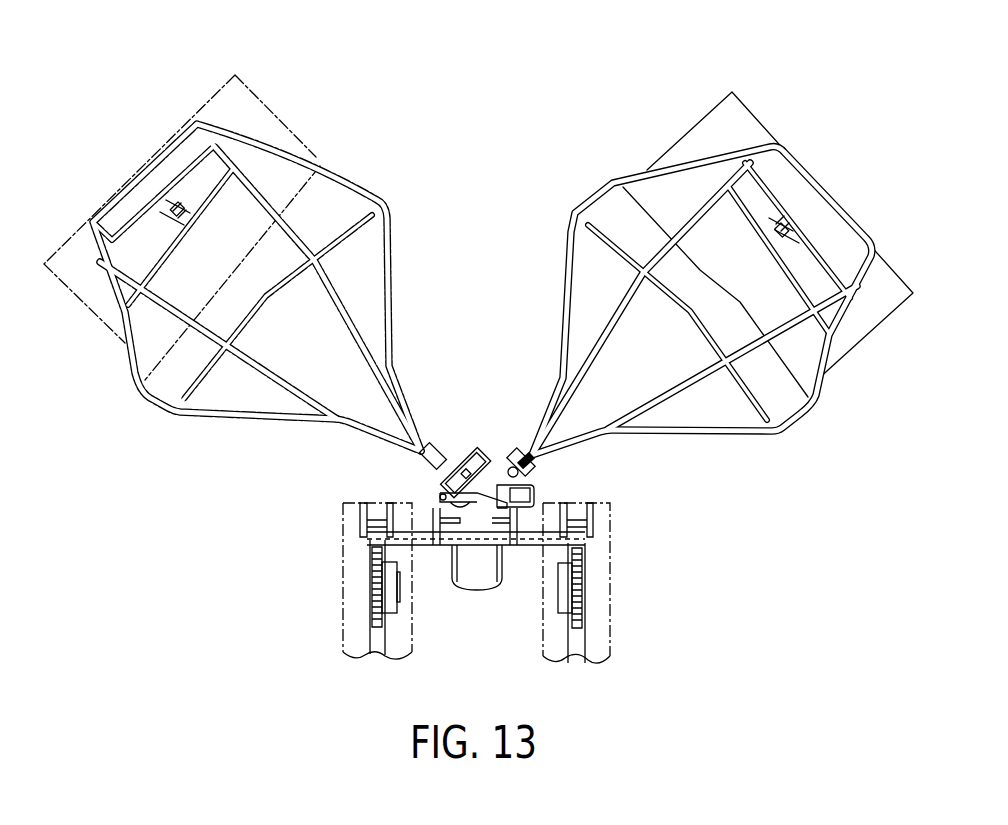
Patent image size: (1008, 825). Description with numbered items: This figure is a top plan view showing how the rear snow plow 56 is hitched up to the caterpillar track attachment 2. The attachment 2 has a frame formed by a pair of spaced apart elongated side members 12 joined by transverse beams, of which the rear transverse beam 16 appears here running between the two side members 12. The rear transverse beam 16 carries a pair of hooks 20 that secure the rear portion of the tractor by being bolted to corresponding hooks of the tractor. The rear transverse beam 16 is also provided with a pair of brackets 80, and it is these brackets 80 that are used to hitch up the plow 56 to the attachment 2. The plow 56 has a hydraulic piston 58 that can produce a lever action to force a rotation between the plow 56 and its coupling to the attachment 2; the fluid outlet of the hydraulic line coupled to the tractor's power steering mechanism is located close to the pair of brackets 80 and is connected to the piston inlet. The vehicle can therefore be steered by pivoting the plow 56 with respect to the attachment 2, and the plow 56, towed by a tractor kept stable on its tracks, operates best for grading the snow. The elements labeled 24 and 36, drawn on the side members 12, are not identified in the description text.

The caterpillar track attachment 2 is at (326, 619).
The side members 12 is at (378, 643).
The rear transverse beam 16 is at (535, 546).
The hooks 20 is at (462, 590).
The slide sleeve 24 is at (388, 502).
The rack 36 is at (364, 558).
The rear snow plow 56 is at (556, 264).
The hydraulic piston 58 is at (540, 498).
The brackets 80 is at (437, 546).